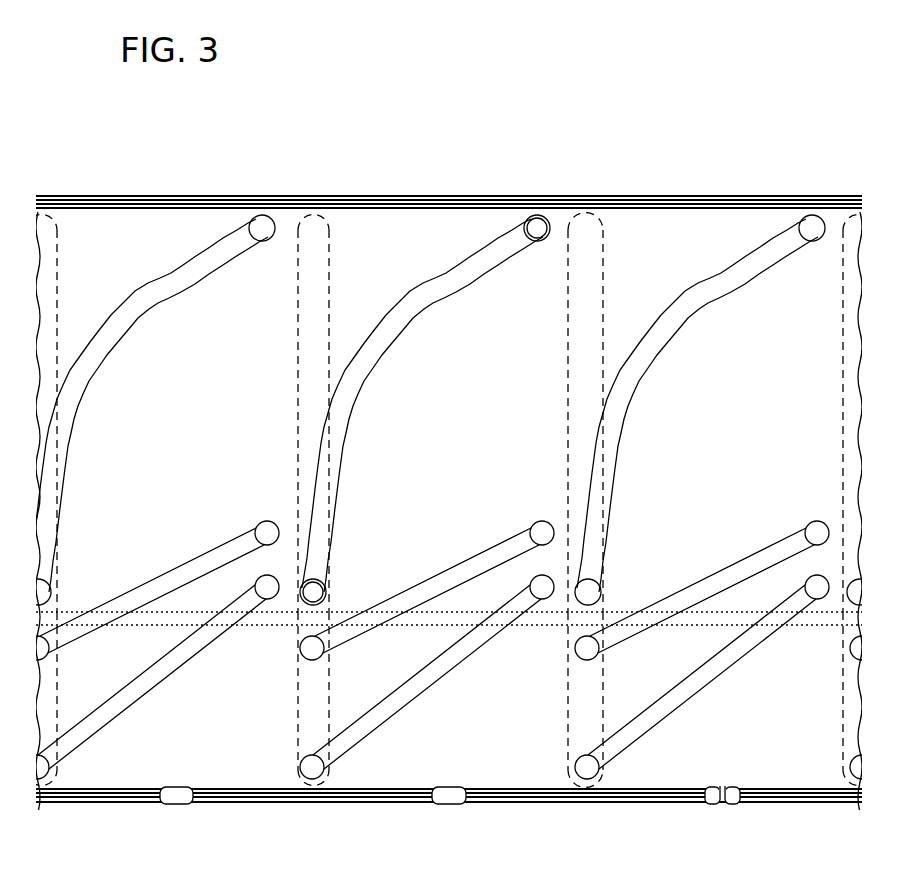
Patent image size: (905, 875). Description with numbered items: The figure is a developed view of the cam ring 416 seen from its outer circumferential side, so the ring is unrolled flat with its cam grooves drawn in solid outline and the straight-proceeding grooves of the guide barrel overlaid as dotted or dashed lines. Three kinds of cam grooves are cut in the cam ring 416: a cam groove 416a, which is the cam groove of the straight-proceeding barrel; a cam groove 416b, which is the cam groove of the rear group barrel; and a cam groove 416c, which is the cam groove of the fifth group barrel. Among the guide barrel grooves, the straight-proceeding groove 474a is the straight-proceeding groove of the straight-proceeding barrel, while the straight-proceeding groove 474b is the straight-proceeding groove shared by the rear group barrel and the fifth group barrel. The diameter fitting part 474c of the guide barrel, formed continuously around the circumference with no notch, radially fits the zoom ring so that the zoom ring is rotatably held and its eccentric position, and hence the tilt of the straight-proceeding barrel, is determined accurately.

The cam ring 416 is at (84, 270).
The cam groove (second cam groove part) 416a is at (408, 290).
The cam groove (third cam groove part) 416b is at (458, 552).
The cam groove 416c is at (440, 684).
The straight-proceeding groove (second guide groove part) 474a is at (298, 325).
The straight-proceeding groove (first guide groove part) 474b is at (298, 735).
The diameter fitting part 474c is at (272, 626).